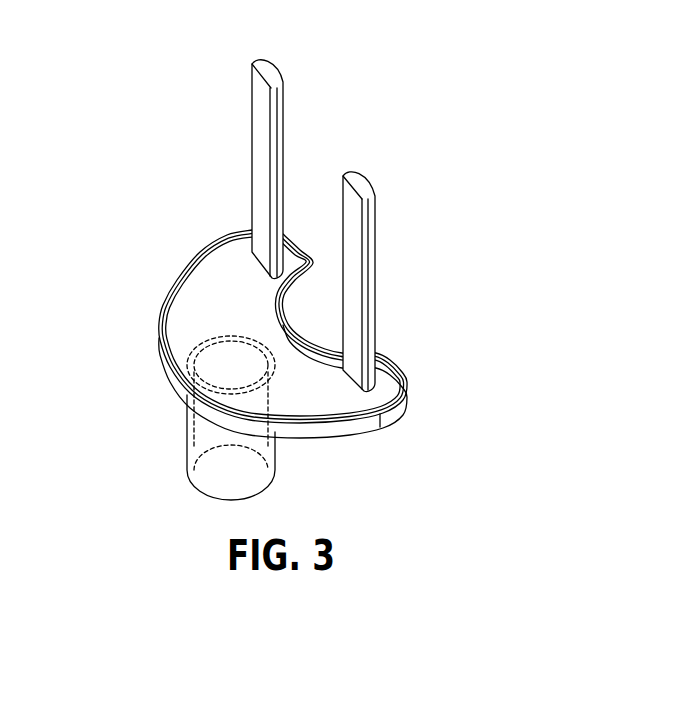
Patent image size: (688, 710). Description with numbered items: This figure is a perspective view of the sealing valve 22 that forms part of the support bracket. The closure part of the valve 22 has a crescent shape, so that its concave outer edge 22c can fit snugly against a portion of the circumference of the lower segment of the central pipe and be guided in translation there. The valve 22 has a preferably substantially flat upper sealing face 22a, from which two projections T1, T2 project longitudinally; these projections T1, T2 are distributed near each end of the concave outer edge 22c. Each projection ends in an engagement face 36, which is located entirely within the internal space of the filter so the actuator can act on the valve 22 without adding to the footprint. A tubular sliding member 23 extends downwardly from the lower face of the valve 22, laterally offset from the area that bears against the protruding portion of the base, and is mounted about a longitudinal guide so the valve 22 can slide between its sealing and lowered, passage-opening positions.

The valve 22 is at (423, 405).
The upper sealing face 22a is at (222, 297).
The concave outer edge 22c is at (300, 318).
The tubular sliding member 23 is at (187, 434).
The engagement face 36 is at (268, 70).
The projection T1 is at (281, 101).
The projection T2 is at (371, 223).